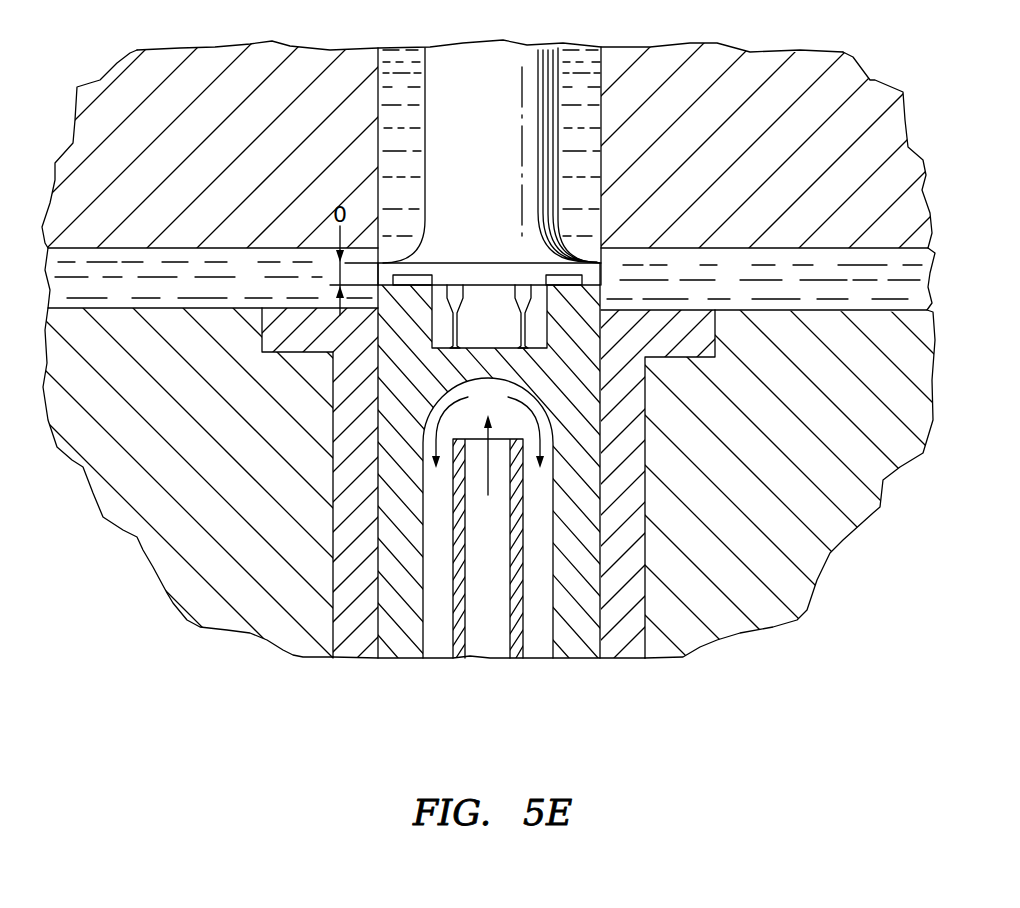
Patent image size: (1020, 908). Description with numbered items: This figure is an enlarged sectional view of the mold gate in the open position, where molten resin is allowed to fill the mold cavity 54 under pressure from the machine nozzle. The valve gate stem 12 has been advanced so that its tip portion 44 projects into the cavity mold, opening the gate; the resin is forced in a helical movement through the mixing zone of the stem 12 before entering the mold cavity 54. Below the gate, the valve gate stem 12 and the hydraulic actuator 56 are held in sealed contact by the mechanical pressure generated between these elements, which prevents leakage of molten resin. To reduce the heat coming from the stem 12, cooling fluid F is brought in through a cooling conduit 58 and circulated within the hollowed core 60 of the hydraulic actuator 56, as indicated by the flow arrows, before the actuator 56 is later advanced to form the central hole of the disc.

The valve gate stem 12 is at (512, 55).
The tip portion 44 is at (540, 315).
The mold cavity 54 is at (738, 268).
The hydraulic actuator 56 is at (582, 396).
The cooling conduit 58 is at (500, 630).
The hollowed core 60 is at (537, 630).
The cooling fluid F is at (552, 435).